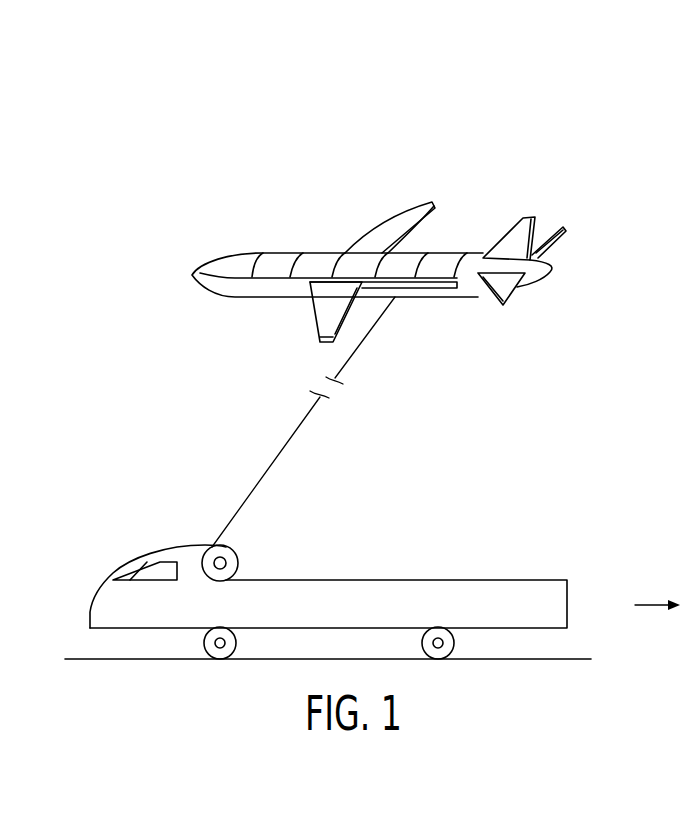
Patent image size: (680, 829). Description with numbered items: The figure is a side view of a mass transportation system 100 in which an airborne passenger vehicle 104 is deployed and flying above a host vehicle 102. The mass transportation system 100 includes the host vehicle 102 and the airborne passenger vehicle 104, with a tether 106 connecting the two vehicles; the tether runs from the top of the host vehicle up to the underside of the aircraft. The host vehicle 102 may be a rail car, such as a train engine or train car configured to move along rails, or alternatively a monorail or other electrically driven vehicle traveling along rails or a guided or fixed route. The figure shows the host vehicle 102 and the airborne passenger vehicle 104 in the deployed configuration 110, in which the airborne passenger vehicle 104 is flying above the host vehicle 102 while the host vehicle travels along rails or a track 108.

The mass transportation system 100 is at (548, 104).
The host vehicle 102 is at (552, 600).
The airborne passenger vehicle 104 is at (222, 257).
The tether 106 is at (290, 438).
The track 108 is at (568, 659).
The deployed configuration 110 is at (607, 205).